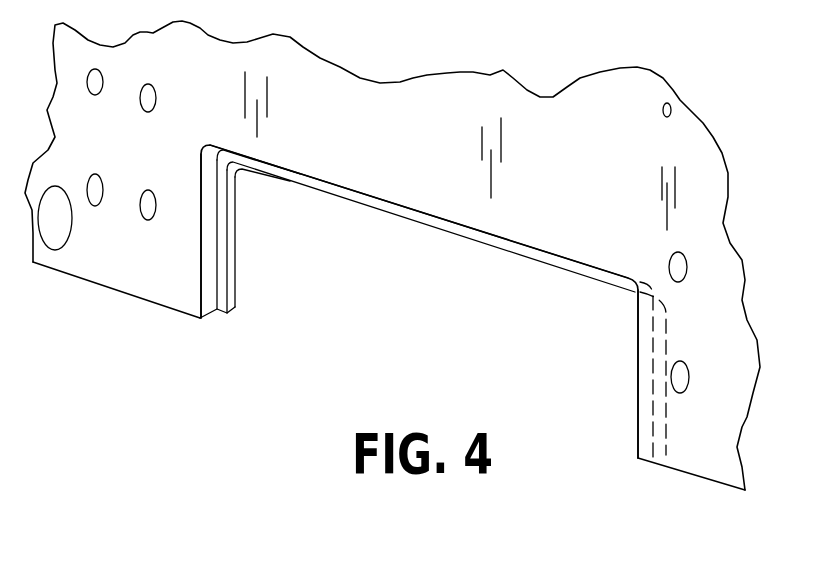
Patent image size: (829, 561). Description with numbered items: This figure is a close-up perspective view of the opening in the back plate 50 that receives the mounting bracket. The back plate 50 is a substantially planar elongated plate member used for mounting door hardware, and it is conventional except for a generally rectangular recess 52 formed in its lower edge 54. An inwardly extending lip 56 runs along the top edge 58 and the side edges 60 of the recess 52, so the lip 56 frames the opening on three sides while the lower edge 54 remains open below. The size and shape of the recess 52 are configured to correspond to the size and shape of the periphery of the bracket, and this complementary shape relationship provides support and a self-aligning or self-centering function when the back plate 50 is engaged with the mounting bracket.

The back plate 50 is at (432, 86).
The recess 52 is at (433, 266).
The lower edge 54 is at (110, 288).
The inwardly extending lip 56 is at (354, 210).
The top edge 58 is at (508, 251).
The side edges 60 is at (206, 263).